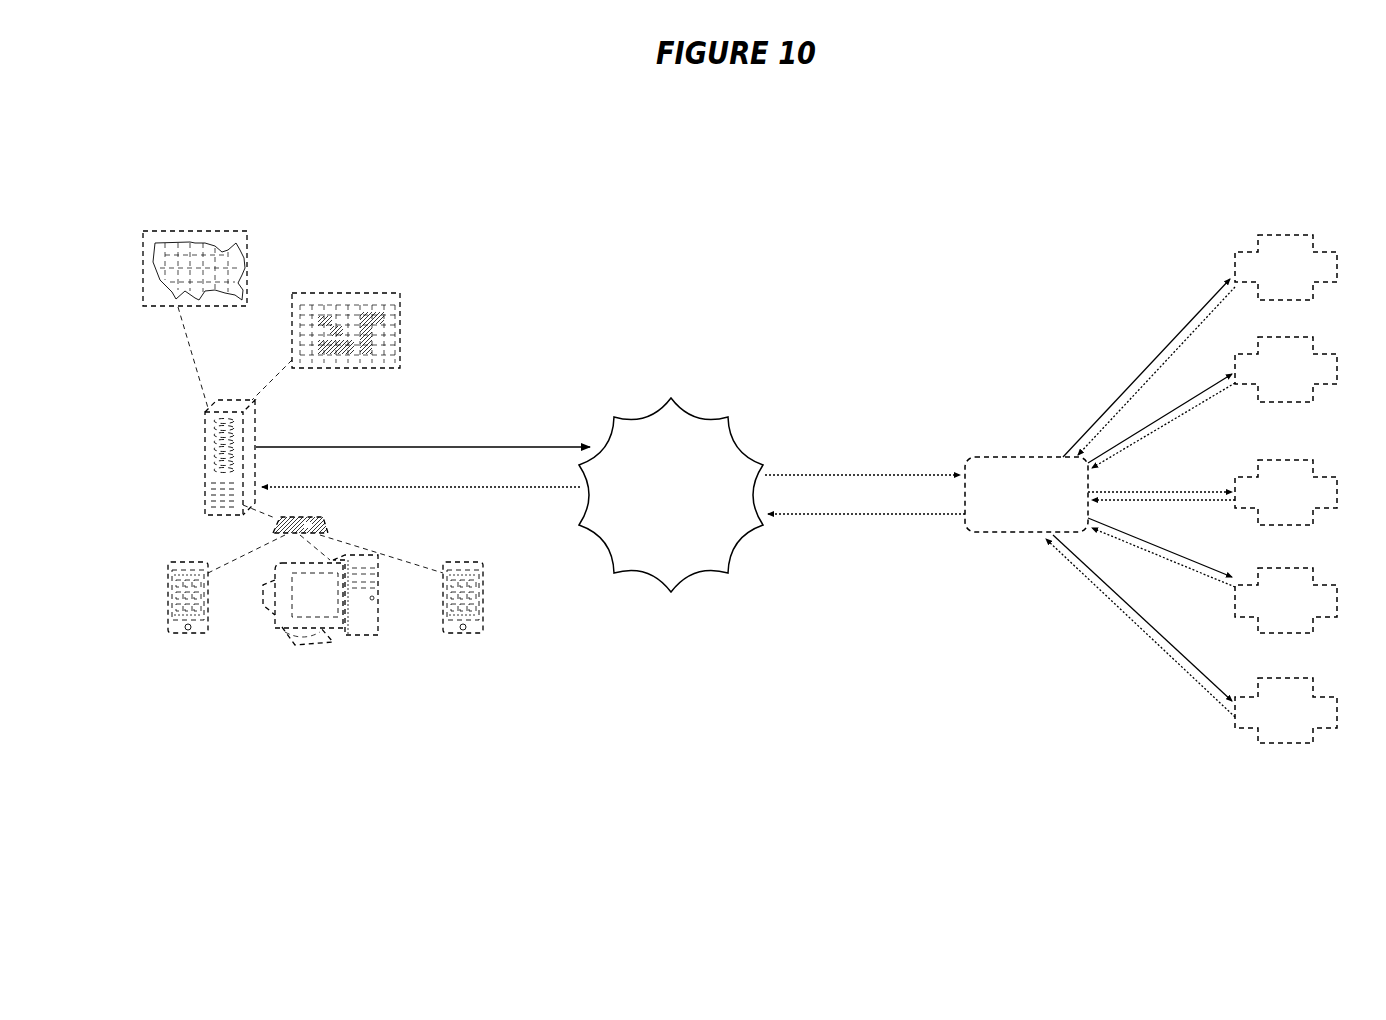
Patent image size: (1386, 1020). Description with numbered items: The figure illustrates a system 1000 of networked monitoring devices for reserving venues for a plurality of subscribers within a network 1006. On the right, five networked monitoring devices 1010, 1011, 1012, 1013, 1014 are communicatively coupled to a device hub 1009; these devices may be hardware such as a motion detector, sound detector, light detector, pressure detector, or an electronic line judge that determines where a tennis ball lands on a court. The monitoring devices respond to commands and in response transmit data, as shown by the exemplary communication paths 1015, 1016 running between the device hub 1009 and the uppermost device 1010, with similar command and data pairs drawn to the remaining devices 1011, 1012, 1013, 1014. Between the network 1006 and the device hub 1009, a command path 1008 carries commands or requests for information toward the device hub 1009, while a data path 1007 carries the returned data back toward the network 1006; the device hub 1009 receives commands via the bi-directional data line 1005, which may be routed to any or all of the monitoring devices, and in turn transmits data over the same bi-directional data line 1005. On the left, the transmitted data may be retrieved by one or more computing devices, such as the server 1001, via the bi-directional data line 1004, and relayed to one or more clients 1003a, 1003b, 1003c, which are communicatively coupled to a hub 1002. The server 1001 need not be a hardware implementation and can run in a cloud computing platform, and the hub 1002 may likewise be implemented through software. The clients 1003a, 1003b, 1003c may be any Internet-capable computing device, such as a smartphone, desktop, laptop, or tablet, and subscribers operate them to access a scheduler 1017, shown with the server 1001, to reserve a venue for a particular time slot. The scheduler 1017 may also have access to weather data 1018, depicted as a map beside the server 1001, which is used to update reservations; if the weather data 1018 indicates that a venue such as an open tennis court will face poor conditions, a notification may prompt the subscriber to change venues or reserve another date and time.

The system 1000 is at (500, 210).
The server 1001 is at (243, 400).
The hub 1002 is at (300, 513).
The client 1003a is at (188, 670).
The client 1003b is at (327, 670).
The client 1003c is at (467, 670).
The bi-directional data line 1004 is at (525, 443).
The bi-directional data line 1005 is at (503, 487).
The network 1006 is at (687, 407).
The data path 1007 is at (782, 517).
The command path 1008 is at (773, 470).
The device hub 1009 is at (978, 457).
The networked monitoring device 1010 is at (1265, 300).
The networked monitoring device 1011 is at (1265, 402).
The networked monitoring device 1012 is at (1265, 525).
The networked monitoring device 1013 is at (1265, 633).
The networked monitoring device 1014 is at (1265, 743).
The communication path 1015 is at (1193, 325).
The communication path 1016 is at (1103, 410).
The scheduler 1017 is at (320, 368).
The weather data 1018 is at (177, 230).